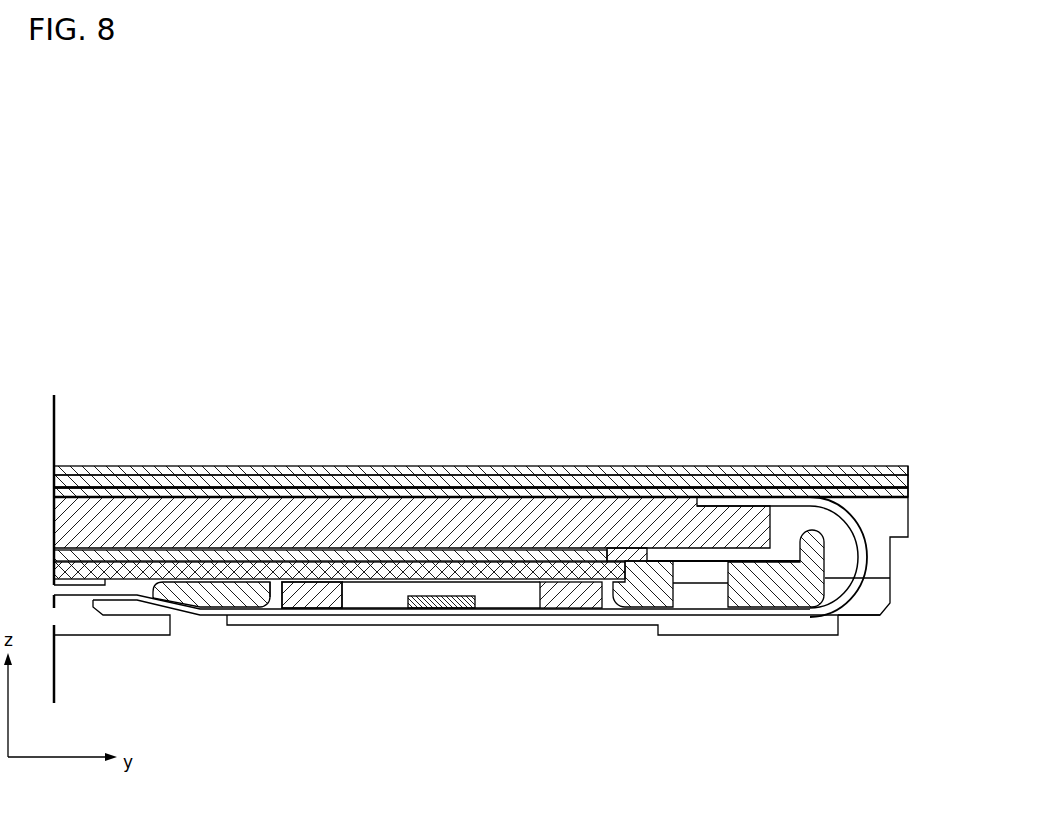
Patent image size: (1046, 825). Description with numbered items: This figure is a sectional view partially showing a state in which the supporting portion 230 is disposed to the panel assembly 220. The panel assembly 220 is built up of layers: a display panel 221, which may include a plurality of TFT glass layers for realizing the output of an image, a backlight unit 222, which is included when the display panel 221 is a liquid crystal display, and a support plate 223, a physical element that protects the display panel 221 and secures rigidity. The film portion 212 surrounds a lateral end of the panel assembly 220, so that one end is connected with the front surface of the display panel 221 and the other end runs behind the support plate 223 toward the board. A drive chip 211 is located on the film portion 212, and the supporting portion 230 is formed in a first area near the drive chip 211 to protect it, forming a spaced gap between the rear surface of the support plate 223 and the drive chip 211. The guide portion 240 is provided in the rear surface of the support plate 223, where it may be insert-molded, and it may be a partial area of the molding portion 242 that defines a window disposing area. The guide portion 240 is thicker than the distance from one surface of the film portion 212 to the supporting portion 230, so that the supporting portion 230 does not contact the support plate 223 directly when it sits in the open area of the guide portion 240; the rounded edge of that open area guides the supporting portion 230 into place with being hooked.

The panel assembly 220 is at (322, 378).
The display panel 221 is at (190, 522).
The backlight unit 222 is at (253, 562).
The support plate 223 is at (317, 573).
The film portion 212 is at (125, 593).
The guide portion 240 is at (213, 594).
The molding portion 242 is at (271, 589).
The supporting portion 230 is at (310, 592).
The drive chip 211 is at (438, 598).